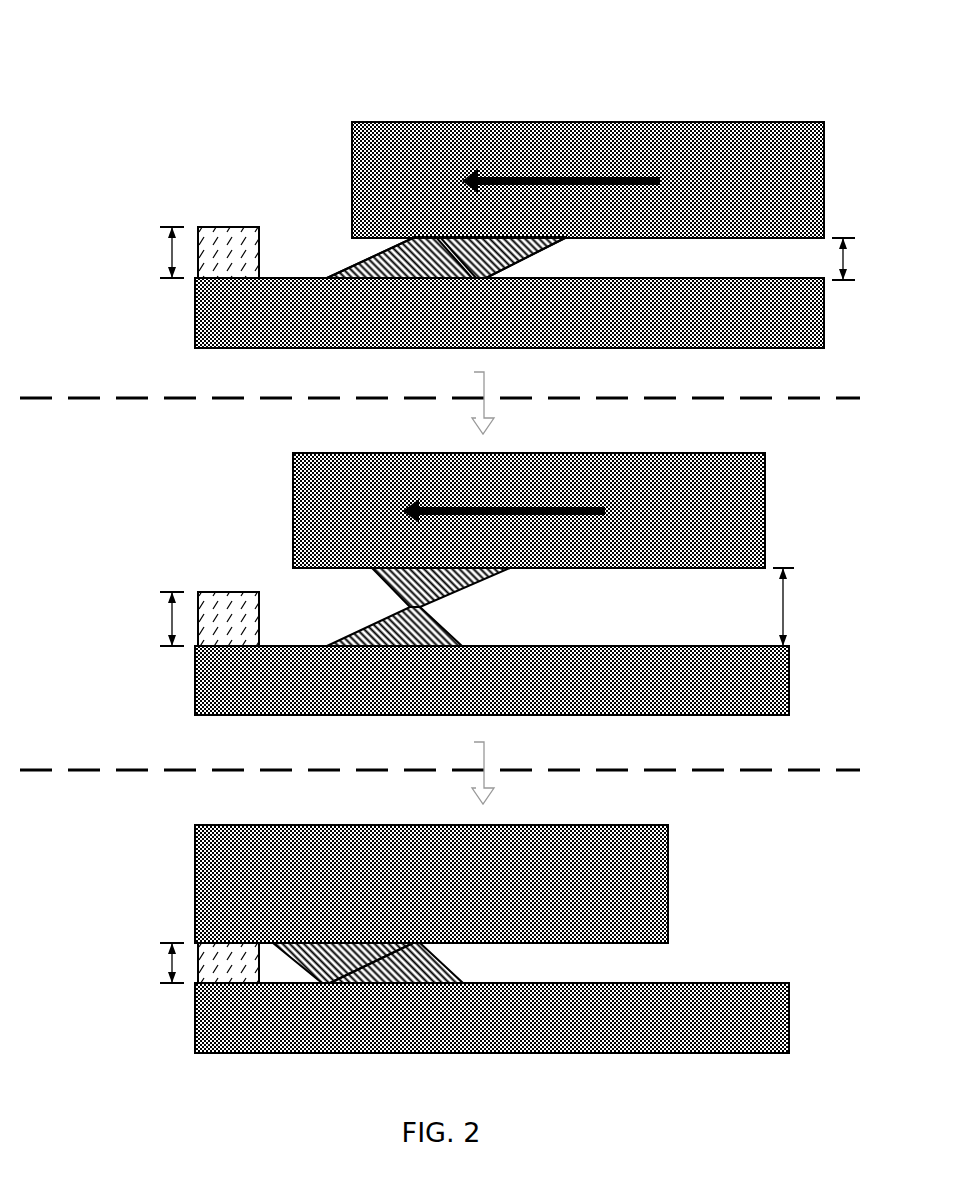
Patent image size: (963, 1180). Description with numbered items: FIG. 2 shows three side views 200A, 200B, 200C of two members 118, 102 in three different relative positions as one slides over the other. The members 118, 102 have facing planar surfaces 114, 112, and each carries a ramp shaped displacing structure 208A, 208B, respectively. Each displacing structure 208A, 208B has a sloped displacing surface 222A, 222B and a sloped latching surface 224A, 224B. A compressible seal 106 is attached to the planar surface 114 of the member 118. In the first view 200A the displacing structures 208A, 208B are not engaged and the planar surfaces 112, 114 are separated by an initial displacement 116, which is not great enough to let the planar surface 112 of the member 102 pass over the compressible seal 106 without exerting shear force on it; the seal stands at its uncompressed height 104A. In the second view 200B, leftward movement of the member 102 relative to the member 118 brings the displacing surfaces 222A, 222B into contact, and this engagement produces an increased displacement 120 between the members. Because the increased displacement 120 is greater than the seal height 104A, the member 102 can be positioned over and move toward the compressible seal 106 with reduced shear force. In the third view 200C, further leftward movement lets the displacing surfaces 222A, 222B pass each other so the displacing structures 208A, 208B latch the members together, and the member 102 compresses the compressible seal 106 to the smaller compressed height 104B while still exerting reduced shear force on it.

The first side view 200A is at (116, 56).
The second side view 200B is at (116, 461).
The third side view 200C is at (116, 831).
The member 102 is at (573, 227).
The member 118 is at (476, 337).
The planar surface 112 is at (685, 240).
The planar surface 114 is at (712, 278).
The initial displacement 116 is at (828, 259).
The increased displacement 120 is at (784, 607).
The compressible seal 106 is at (216, 263).
The compressible seal height 104A is at (171, 436).
The compressible seal height 104B is at (151, 963).
The displacing structure 208A is at (390, 274).
The displacing structure 208B is at (464, 259).
The sloped latching surface 224A is at (370, 258).
The sloped latching surface 224B is at (522, 259).
The sloped displacing surface 222A is at (440, 624).
The sloped displacing surface 222B is at (396, 590).